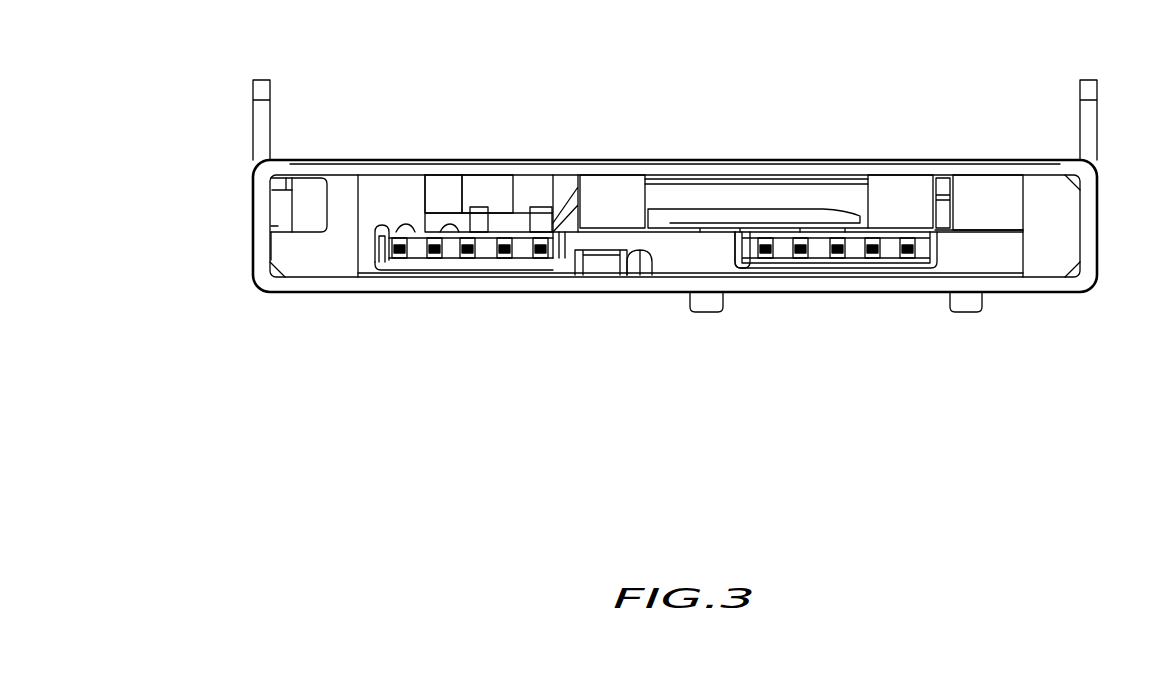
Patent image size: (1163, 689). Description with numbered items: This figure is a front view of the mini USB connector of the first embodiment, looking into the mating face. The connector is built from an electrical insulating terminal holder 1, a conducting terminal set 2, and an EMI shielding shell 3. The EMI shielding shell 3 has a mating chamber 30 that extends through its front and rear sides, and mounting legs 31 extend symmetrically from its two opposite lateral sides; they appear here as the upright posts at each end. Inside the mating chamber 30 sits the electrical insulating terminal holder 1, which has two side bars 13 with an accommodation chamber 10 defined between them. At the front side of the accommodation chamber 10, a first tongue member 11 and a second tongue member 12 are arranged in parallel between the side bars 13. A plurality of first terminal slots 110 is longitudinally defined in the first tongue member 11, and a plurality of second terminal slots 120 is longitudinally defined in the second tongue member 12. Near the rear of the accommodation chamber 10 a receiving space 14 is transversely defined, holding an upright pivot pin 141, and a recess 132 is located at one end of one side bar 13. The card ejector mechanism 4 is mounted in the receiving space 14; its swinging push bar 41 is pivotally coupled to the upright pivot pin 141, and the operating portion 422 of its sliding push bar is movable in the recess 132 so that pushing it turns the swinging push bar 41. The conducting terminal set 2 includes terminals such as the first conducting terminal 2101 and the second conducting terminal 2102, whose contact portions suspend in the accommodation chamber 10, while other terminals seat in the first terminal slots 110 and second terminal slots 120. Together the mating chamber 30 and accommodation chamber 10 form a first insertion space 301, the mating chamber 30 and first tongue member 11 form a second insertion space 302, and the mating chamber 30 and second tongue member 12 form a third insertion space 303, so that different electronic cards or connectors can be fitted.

The electrical insulating terminal holder 1 is at (1002, 262).
The accommodation chamber 10 is at (1034, 207).
The first tongue member 11 is at (918, 250).
The first terminal slots 110 is at (862, 238).
The second tongue member 12 is at (386, 260).
The second terminal slots 120 is at (408, 240).
The side bars 13 is at (305, 263).
The recess 132 is at (278, 233).
The receiving space 14 is at (437, 222).
The upright pivot pin 141 is at (498, 188).
The conducting terminal set 2 is at (603, 82).
The first conducting terminal 2101 is at (478, 220).
The second conducting terminal 2102 is at (540, 218).
The EMI shielding shell 3 is at (264, 190).
The mating chamber 30 is at (668, 284).
The first insertion space 301 is at (765, 175).
The second insertion space 302 is at (888, 205).
The third insertion space 303 is at (390, 200).
The mounting legs 31 is at (262, 124).
The card ejector mechanism 4 is at (437, 171).
The swinging push bar 41 is at (436, 226).
The operating portion 422 is at (310, 210).